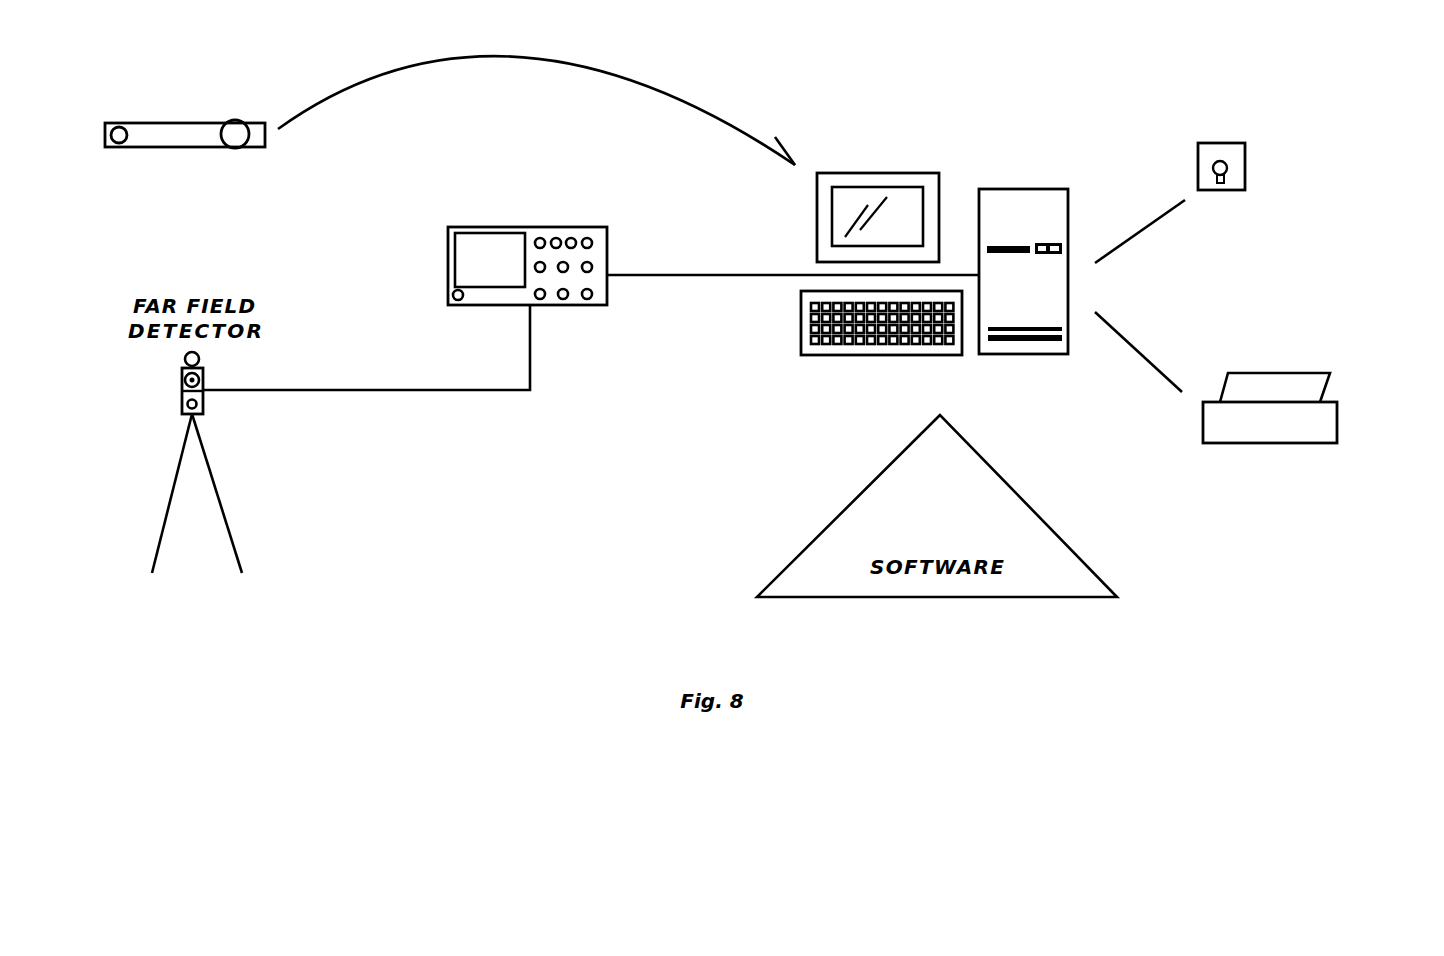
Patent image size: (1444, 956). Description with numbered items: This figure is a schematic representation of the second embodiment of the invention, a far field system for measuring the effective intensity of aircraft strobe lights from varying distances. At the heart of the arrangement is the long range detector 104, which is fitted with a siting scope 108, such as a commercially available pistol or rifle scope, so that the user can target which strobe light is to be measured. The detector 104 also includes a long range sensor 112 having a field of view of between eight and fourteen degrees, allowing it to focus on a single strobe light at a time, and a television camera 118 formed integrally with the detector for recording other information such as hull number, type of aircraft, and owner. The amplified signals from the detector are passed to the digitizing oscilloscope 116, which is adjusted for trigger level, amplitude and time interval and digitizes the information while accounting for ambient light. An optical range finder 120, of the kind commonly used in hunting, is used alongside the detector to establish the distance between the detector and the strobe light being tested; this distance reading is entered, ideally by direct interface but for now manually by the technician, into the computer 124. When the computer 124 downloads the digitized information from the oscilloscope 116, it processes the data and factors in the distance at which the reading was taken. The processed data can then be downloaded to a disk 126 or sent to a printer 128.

The detector 104 is at (205, 377).
The siting scope 108 is at (186, 360).
The long range sensor 112 is at (182, 377).
The television camera 118 is at (203, 403).
The optical range finder 120 is at (265, 140).
The digitizing oscilloscope 116 is at (597, 306).
The computer 124 is at (990, 312).
The disk 126 is at (1233, 158).
The printer 128 is at (1340, 417).